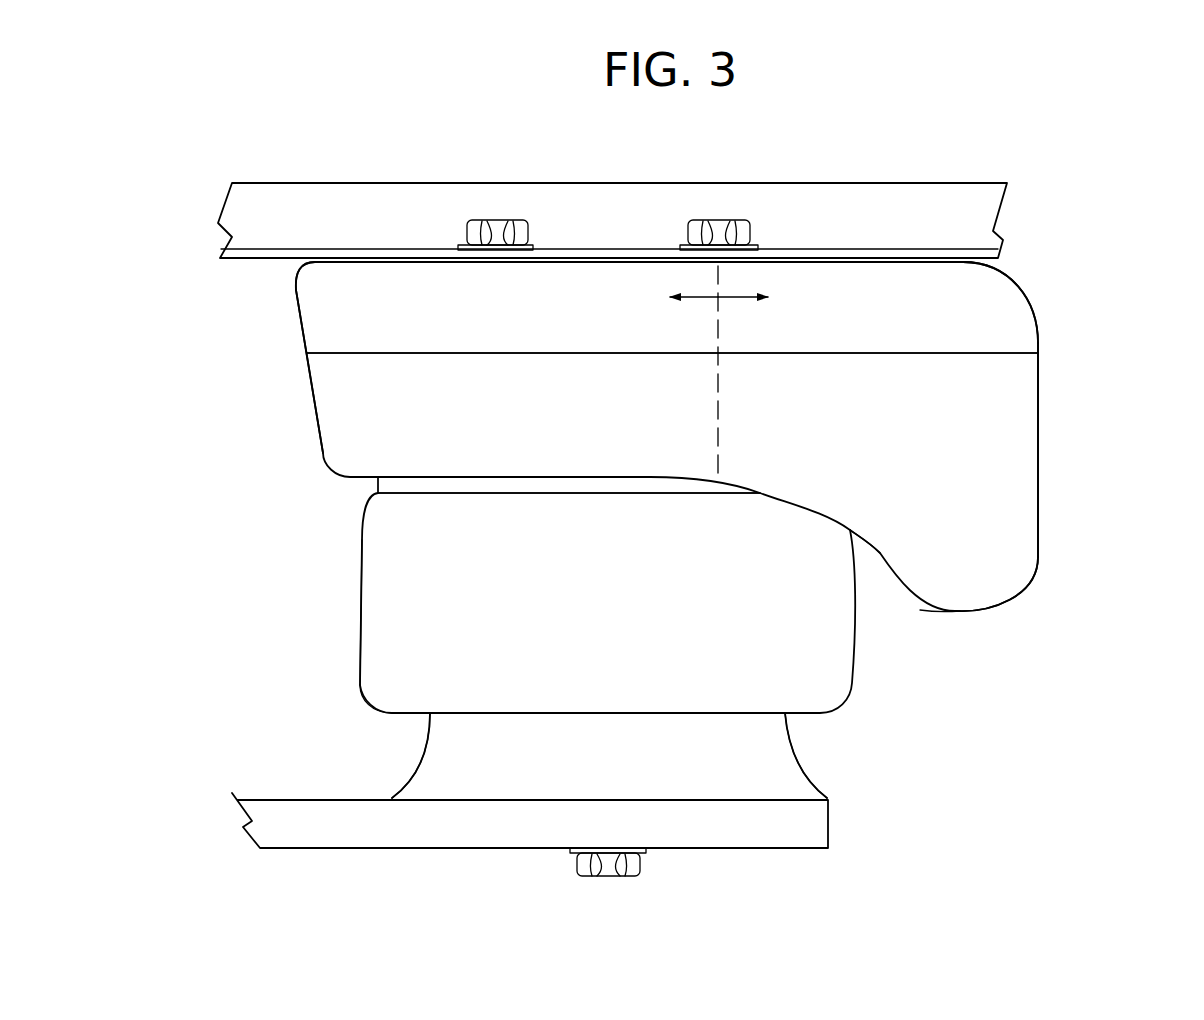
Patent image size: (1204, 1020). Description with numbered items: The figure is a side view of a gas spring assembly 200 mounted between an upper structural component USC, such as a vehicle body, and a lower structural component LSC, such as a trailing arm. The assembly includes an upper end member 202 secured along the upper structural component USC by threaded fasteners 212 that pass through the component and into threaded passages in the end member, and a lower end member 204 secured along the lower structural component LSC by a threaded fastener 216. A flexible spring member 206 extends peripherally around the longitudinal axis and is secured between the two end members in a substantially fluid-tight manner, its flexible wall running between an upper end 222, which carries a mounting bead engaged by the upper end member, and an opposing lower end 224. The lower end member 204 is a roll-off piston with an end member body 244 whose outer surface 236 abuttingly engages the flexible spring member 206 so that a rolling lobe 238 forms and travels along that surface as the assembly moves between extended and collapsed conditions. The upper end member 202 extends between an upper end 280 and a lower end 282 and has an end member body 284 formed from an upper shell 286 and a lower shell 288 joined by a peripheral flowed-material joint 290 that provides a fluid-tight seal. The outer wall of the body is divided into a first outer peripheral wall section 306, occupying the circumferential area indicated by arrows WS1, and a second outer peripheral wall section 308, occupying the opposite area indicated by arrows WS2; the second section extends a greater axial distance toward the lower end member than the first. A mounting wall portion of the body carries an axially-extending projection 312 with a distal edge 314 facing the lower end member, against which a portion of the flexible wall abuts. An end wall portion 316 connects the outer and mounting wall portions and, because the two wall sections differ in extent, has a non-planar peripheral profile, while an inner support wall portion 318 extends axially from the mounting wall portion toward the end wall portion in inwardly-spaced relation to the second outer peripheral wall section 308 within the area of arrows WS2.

The gas spring assembly 200 is at (1077, 336).
The end member 202 is at (304, 355).
The end member 204 is at (844, 766).
The flexible spring member 206 is at (358, 600).
The threaded fasteners 212 is at (495, 231).
The threaded fastener 216 is at (610, 869).
The end of flexible wall 222 is at (354, 502).
The end of flexible wall 224 is at (344, 692).
The outer surface 236 is at (442, 767).
The rolling lobe 238 is at (387, 713).
The end member body 244 is at (807, 741).
The first or upper end 280 is at (1046, 286).
The second or lower end 282 is at (1040, 582).
The end member body 284 is at (1041, 384).
The first or upper shell 286 is at (294, 289).
The second or lower shell 288 is at (314, 405).
The flowed-material joint 290 is at (937, 355).
The first outer peripheral wall section 306 is at (580, 285).
The second outer peripheral wall section 308 is at (883, 285).
The axially-extending projection 312 is at (517, 483).
The distal edge 314 is at (586, 494).
The end wall portion 316 is at (420, 480).
The inner support wall portion 318 is at (880, 557).
The upper structural component USC is at (284, 198).
The lower structural component LSC is at (350, 835).
The arrows representing first wall section area WS1 is at (700, 298).
The arrows representing second wall section area WS2 is at (738, 298).